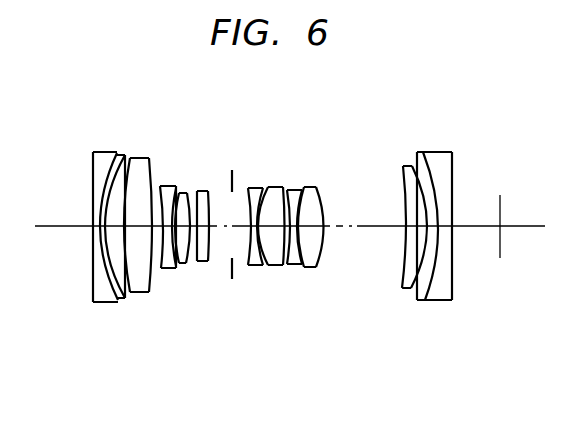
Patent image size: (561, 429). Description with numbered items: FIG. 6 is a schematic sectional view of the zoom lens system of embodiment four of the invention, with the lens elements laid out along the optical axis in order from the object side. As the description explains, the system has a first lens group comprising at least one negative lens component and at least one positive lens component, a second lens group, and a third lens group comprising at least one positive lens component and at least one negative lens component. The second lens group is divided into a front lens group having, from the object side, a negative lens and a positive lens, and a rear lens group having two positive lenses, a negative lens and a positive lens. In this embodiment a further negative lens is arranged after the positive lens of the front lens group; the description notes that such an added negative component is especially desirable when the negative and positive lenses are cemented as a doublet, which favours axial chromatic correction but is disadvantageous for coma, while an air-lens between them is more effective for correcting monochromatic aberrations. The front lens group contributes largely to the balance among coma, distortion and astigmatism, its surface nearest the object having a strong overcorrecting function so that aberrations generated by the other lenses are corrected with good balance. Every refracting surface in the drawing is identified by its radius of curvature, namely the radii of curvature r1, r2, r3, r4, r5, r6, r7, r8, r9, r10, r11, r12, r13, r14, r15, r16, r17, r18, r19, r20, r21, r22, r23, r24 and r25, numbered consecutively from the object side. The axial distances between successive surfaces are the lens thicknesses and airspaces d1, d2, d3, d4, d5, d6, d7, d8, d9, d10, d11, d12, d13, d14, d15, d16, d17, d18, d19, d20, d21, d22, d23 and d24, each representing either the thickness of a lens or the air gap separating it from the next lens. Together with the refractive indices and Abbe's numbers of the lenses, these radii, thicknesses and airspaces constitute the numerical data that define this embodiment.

The radius of curvature of first lens surface r1 is at (93, 180).
The radius of curvature of second lens surface r2 is at (98, 163).
The radius of curvature of third lens surface r3 is at (106, 168).
The radius of curvature of fourth lens surface r4 is at (123, 160).
The radius of curvature of fifth lens surface r5 is at (129, 162).
The radius of curvature of sixth lens surface r6 is at (146, 162).
The radius of curvature of seventh lens surface r7 is at (160, 187).
The radius of curvature of eighth lens surface r8 is at (174, 187).
The radius of curvature of ninth lens surface r9 is at (180, 194).
The radius of curvature of tenth lens surface r10 is at (187, 194).
The radius of curvature of eleventh lens surface r11 is at (209, 192).
The radius of curvature of twelfth lens surface r12 is at (229, 170).
The radius of curvature of thirteenth lens surface r13 is at (248, 195).
The radius of curvature of fourteenth lens surface r14 is at (260, 190).
The radius of curvature of fifteenth lens surface r15 is at (270, 189).
The radius of curvature of sixteenth lens surface r16 is at (278, 189).
The radius of curvature of seventeenth lens surface r17 is at (287, 191).
The radius of curvature of eighteenth lens surface r18 is at (303, 190).
The radius of curvature of nineteenth lens surface r19 is at (309, 188).
The radius of curvature of twentieth lens surface r20 is at (318, 189).
The radius of curvature of twenty-first lens surface r21 is at (324, 213).
The radius of curvature of twenty-second lens surface r22 is at (404, 180).
The radius of curvature of twenty-third lens surface r23 is at (405, 167).
The radius of curvature of twenty-fourth lens surface r24 is at (423, 153).
The radius of curvature of twenty-fifth lens surface r25 is at (452, 160).
The first lens thickness or airspace d1 is at (96, 232).
The second lens thickness or airspace d2 is at (104, 228).
The third lens thickness or airspace d3 is at (112, 250).
The fourth lens thickness or airspace d4 is at (110, 296).
The fifth lens thickness or airspace d5 is at (136, 294).
The sixth lens thickness or airspace d6 is at (154, 287).
The seventh lens thickness or airspace d7 is at (160, 270).
The eighth lens thickness or airspace d8 is at (166, 270).
The ninth lens thickness or airspace d9 is at (174, 268).
The tenth lens thickness or airspace d10 is at (191, 264).
The eleventh lens thickness or airspace d11 is at (203, 262).
The twelfth lens thickness or airspace d12 is at (230, 280).
The thirteenth lens thickness or airspace d13 is at (250, 265).
The fourteenth lens thickness or airspace d14 is at (262, 264).
The fifteenth lens thickness or airspace d15 is at (277, 264).
The sixteenth lens thickness or airspace d16 is at (284, 264).
The seventeenth lens thickness or airspace d17 is at (293, 264).
The eighteenth lens thickness or airspace d18 is at (300, 264).
The nineteenth lens thickness or airspace d19 is at (318, 247).
The twentieth lens thickness or airspace d20 is at (387, 225).
The twenty-first lens thickness or airspace d21 is at (412, 283).
The twenty-second lens thickness or airspace d22 is at (437, 282).
The twenty-third lens thickness or airspace d23 is at (430, 258).
The twenty-fourth lens thickness or airspace d24 is at (433, 236).